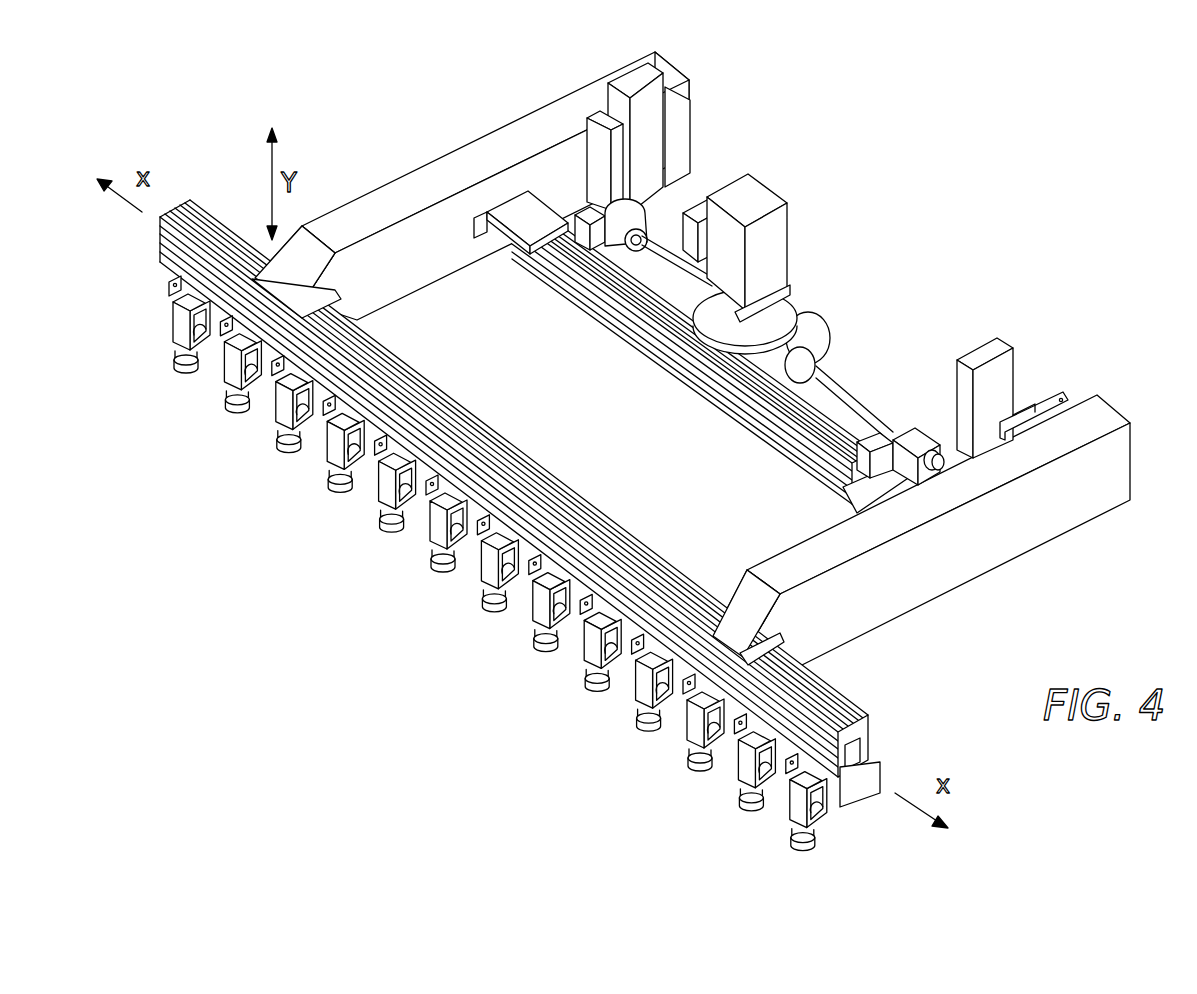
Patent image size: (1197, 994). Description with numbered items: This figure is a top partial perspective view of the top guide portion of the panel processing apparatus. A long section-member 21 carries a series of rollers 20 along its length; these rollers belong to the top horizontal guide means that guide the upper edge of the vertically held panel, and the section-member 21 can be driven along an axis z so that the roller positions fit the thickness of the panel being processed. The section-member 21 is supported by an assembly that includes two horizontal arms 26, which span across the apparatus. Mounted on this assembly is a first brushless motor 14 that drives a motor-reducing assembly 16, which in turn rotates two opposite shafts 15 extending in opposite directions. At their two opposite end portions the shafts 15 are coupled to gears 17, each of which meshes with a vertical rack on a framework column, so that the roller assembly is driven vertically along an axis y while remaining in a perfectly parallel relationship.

The first brushless motor 14 is at (772, 270).
The opposite shafts 15 is at (680, 270).
The motor-reducing assembly 16 is at (790, 313).
The gears 17 is at (630, 196).
The rollers 20 is at (840, 810).
The section-member 21 is at (843, 710).
The horizontal arms 26 is at (380, 203).